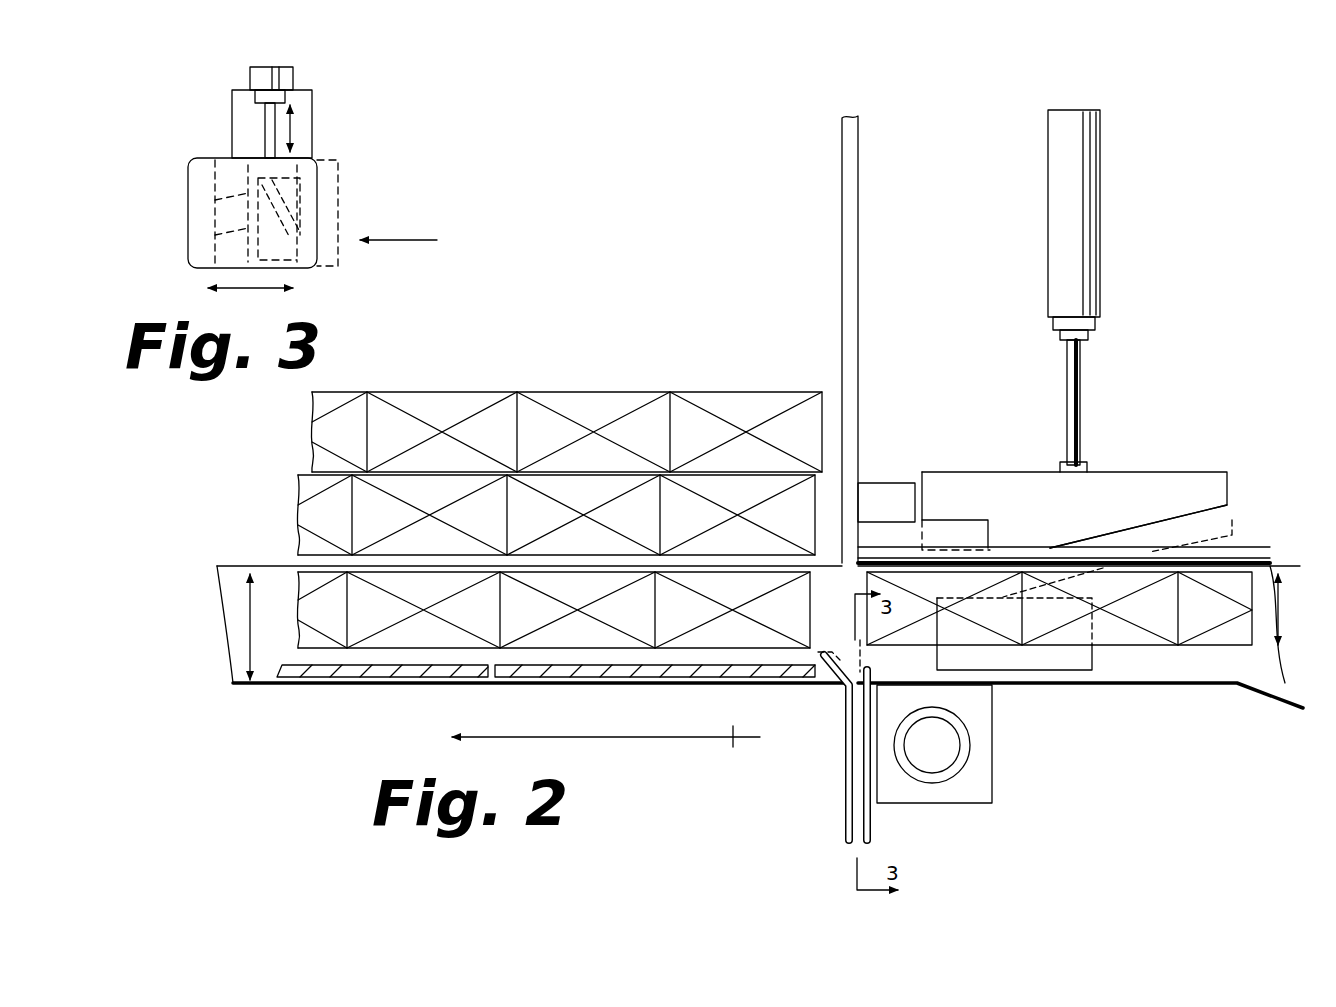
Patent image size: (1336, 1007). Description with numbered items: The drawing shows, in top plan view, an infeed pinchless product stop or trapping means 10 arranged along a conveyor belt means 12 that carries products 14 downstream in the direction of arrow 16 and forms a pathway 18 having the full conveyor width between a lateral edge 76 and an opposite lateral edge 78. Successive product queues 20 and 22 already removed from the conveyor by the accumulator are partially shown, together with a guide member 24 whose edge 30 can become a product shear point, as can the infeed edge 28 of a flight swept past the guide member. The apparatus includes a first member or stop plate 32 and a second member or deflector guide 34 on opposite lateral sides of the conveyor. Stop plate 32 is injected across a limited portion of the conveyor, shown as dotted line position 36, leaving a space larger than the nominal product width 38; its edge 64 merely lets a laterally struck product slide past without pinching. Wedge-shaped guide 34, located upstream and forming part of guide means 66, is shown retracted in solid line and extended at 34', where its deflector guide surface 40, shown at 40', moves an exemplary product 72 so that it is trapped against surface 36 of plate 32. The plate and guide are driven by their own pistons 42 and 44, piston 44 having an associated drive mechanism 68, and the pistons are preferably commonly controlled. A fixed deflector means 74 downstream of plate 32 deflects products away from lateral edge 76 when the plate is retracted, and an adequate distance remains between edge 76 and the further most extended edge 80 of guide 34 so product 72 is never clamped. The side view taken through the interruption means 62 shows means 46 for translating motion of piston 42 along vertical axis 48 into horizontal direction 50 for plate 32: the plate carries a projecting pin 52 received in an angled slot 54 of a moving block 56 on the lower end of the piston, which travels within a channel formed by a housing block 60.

In FIG. 2, the infeed pinchless product stop means 10 is at (1093, 754).
In FIG. 2, the conveyor belt means 12 is at (268, 688).
In FIG. 2, the products 14 is at (437, 392).
In FIG. 2, the arrow 16 is at (650, 738).
In FIG. 2, the pathway 18 is at (253, 622).
In FIG. 2, the product queue 20 is at (270, 513).
In FIG. 2, the product queue 22 is at (276, 434).
In FIG. 2, the guide member 24 is at (842, 302).
In FIG. 2, the infeed edge of flight member 28 is at (830, 682).
In FIG. 2, the edge of guide member 30 is at (850, 565).
In FIG. 3, the first member / stop plate 32 is at (188, 222).
In FIG. 2, the first member / stop plate 32 is at (875, 820).
In FIG. 2, the second member / deflector guide 34 is at (1074, 490).
In FIG. 2, the dotted line position of guiding member 34' is at (1212, 517).
In FIG. 2, the dotted line portion / extended position of stop plate 36 is at (875, 652).
In FIG. 2, the nominal width of product 38 is at (1074, 611).
In FIG. 2, the deflector guide surface 40 is at (1138, 526).
In FIG. 2, the angled surface in extended position 40' is at (1067, 585).
In FIG. 3, the piston 42 is at (262, 118).
In FIG. 2, the piston 42 is at (933, 726).
In FIG. 2, the piston 44 is at (1082, 372).
In FIG. 3, the means for translating motion 46 is at (398, 239).
In FIG. 3, the vertical axis 48 is at (300, 130).
In FIG. 3, the horizontal direction 50 is at (262, 289).
In FIG. 3, the projecting pin 52 is at (210, 206).
In FIG. 3, the angled or diagonal slot 54 is at (300, 206).
In FIG. 3, the moving block 56 is at (210, 260).
In FIG. 2, the housing or block 60 is at (995, 722).
In FIG. 2, the interruption means 62 is at (970, 823).
In FIG. 3, the edge of plate 64 is at (188, 176).
In FIG. 2, the edge of plate 64 is at (860, 640).
In FIG. 2, the guide means 66 is at (970, 428).
In FIG. 2, the drive mechanism 68 is at (1105, 240).
In FIG. 2, the product 72 is at (1092, 655).
In FIG. 2, the fixed deflector means 74 is at (836, 688).
In FIG. 2, the lateral edge of conveyor pathway 76 is at (358, 688).
In FIG. 2, the opposite lateral edge 78 is at (248, 566).
In FIG. 2, the further most extended edge of guide member 80 is at (990, 590).